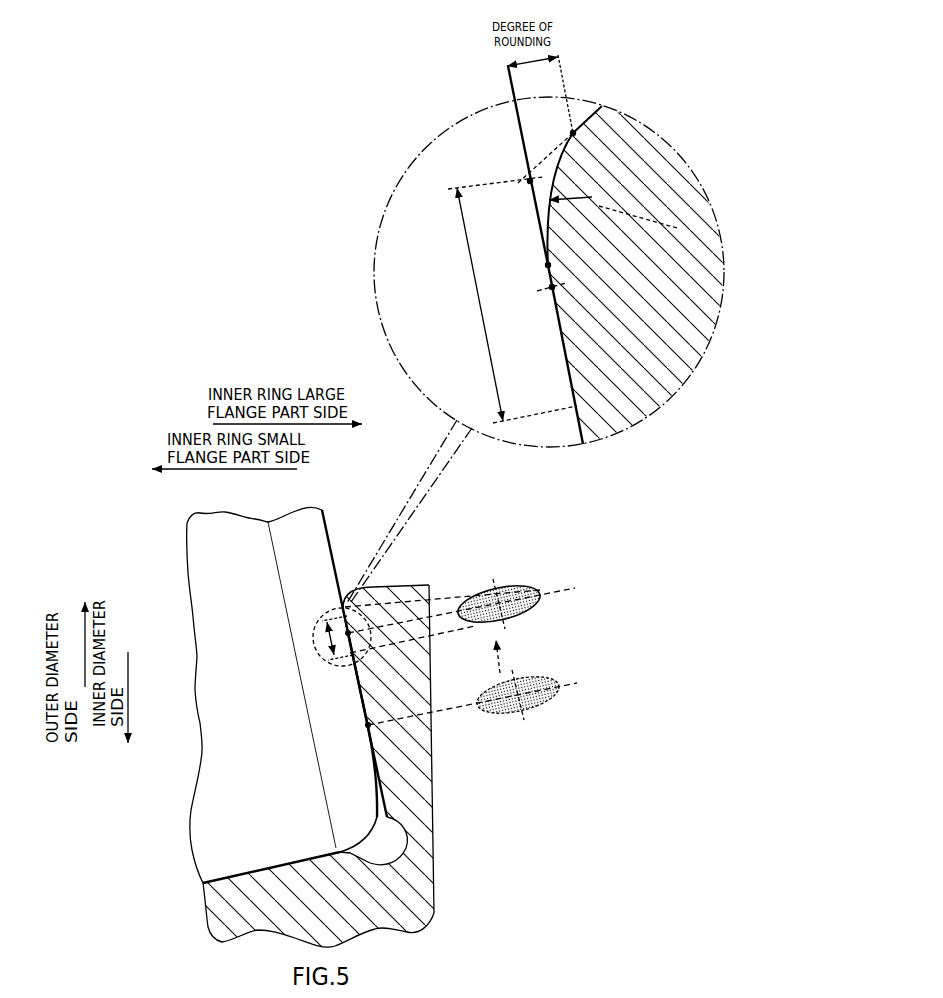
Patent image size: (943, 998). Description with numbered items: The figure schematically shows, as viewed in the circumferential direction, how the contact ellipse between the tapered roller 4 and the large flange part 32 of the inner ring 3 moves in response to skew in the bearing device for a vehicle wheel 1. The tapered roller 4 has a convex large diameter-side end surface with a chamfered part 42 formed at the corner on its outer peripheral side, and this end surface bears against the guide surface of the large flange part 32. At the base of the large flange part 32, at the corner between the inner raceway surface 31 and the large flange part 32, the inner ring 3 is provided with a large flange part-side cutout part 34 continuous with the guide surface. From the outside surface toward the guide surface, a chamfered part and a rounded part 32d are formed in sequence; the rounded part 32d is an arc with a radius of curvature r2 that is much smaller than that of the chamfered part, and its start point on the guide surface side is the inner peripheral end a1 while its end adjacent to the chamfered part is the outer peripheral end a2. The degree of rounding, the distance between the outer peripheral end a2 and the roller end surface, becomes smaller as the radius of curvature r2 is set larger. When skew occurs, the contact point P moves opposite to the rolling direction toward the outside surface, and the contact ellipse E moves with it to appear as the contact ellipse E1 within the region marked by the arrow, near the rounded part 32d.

The bearing device for a vehicle wheel 1 is at (568, 487).
The inner ring 3 is at (243, 867).
The tapered roller 4 is at (284, 691).
The inner raceway surface 31 is at (297, 857).
The large flange part 32 is at (360, 665).
The rounded part 32d is at (533, 221).
The large flange part-side cutout part 34 is at (403, 843).
The chamfered part 42 is at (367, 853).
The contact ellipse E is at (543, 676).
The contact ellipse E1 is at (513, 583).
The contact point P is at (366, 728).
The inner peripheral end of the rounded part a1 is at (552, 265).
The outer peripheral end of the rounded part a2 is at (576, 135).
The radius of curvature of the rounded part r2 is at (613, 208).